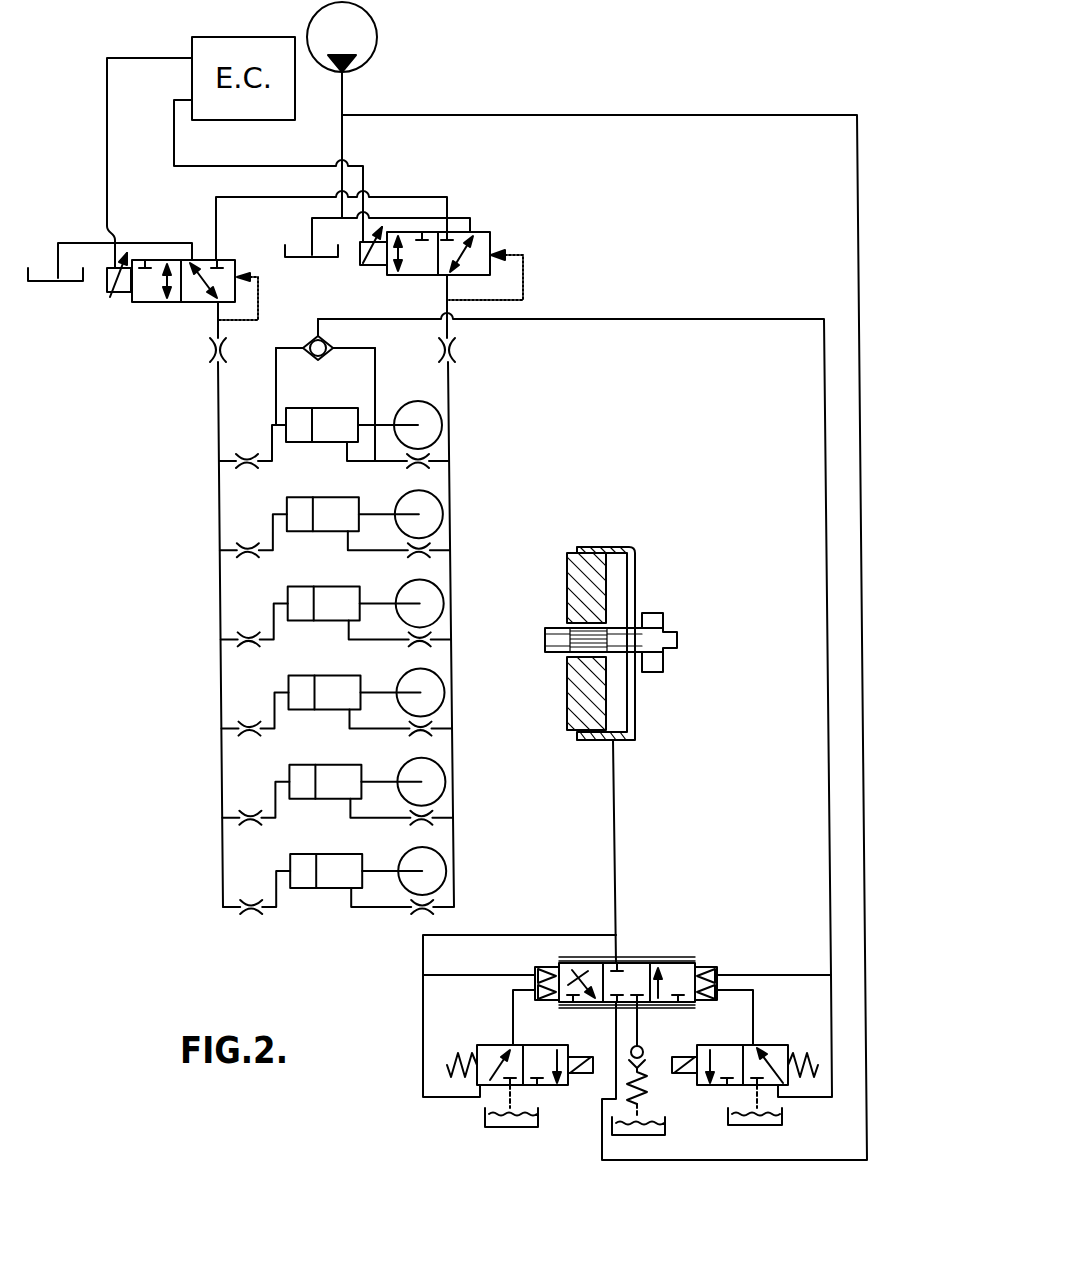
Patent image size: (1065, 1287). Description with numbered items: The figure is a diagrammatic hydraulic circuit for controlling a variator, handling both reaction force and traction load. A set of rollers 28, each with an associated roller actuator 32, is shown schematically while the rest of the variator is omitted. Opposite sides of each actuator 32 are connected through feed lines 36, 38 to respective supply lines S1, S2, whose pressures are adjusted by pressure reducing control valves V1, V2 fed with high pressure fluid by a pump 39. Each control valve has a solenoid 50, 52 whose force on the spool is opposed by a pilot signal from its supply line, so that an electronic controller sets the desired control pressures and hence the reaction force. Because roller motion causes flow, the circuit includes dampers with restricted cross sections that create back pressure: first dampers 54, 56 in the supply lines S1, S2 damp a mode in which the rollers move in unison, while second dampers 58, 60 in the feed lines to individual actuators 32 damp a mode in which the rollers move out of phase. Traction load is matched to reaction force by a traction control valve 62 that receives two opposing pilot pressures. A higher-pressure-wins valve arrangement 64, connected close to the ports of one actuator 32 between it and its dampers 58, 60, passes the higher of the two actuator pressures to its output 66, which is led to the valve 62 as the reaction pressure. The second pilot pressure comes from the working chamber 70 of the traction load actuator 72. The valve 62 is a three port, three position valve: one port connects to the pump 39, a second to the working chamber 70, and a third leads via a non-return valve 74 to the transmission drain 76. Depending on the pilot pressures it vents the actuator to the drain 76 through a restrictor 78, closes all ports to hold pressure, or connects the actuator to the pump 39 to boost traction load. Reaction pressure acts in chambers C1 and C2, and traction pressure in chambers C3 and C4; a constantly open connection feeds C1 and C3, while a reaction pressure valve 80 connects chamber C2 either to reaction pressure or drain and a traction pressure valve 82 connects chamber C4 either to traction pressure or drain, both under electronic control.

The pump 39 is at (358, 76).
The solenoid 50 is at (107, 290).
The solenoid 52 is at (360, 254).
The first damper 54 is at (213, 350).
The first damper 56 is at (456, 348).
The second damper 58 is at (247, 455).
The second damper 60 is at (452, 565).
The feed line 36 is at (228, 462).
The feed line 38 is at (464, 535).
The roller actuator 32 is at (393, 498).
The roller 28 is at (447, 514).
The higher-pressure-wins valve arrangement 64 is at (305, 347).
The output 66 is at (548, 318).
The working chamber 70 is at (618, 603).
The traction load actuator 72 is at (618, 625).
The traction control valve 62 is at (614, 972).
The non-return valve 74 is at (645, 1070).
The transmission drain 76 is at (665, 1130).
The restrictor 78 is at (583, 972).
The reaction pressure valve 80 is at (709, 1092).
The traction pressure valve 82 is at (549, 1093).
The pressure reducing control valve V1 is at (147, 302).
The pressure reducing control valve V2 is at (490, 238).
The supply line S1 is at (218, 592).
The supply line S2 is at (453, 598).
The first reaction pressure chamber C1 is at (700, 965).
The second reaction pressure chamber C2 is at (697, 1003).
The first traction pressure chamber C3 is at (543, 965).
The second traction pressure chamber C4 is at (553, 1000).